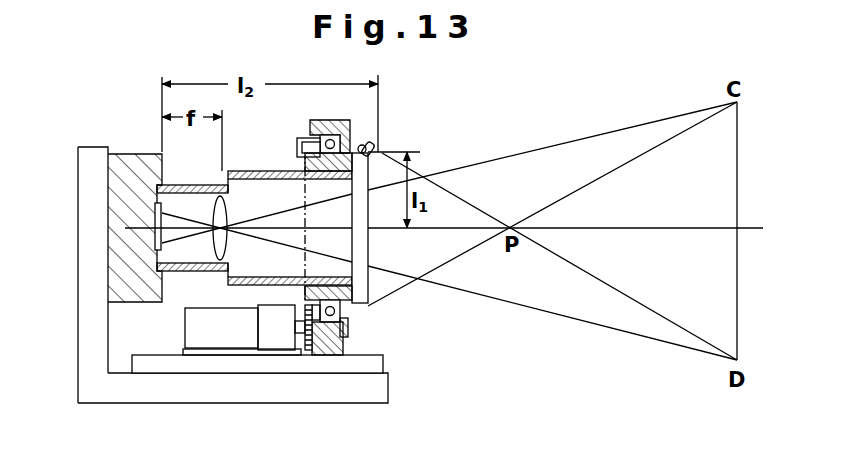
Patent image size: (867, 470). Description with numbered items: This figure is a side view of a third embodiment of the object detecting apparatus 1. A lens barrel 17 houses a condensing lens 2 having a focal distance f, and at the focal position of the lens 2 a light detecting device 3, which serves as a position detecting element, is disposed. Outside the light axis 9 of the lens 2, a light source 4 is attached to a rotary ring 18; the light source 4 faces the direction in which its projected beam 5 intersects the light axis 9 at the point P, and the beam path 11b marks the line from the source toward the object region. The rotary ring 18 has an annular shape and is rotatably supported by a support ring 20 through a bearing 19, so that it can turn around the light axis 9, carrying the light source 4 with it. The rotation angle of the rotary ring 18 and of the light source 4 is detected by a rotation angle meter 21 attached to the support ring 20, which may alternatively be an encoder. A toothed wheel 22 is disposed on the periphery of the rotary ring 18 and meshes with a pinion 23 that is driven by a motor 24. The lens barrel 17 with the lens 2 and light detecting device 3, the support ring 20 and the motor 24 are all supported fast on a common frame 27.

The housing frame 1 is at (121, 122).
The lens 2 is at (222, 212).
The light detecting device 3 is at (156, 214).
The light source 4 is at (380, 150).
The light beam 5 is at (513, 157).
The light axis 9 is at (667, 227).
The scanning beam 11b is at (583, 188).
The lens barrel 17 is at (263, 172).
The rotary ring 18 is at (357, 143).
The bearing 19 is at (341, 307).
The support ring 20 is at (329, 356).
The rotation angle meter 21 is at (302, 152).
The toothed wheel 22 is at (303, 290).
The pinion 23 is at (306, 352).
The motor 24 is at (235, 340).
The frame 27 is at (178, 392).